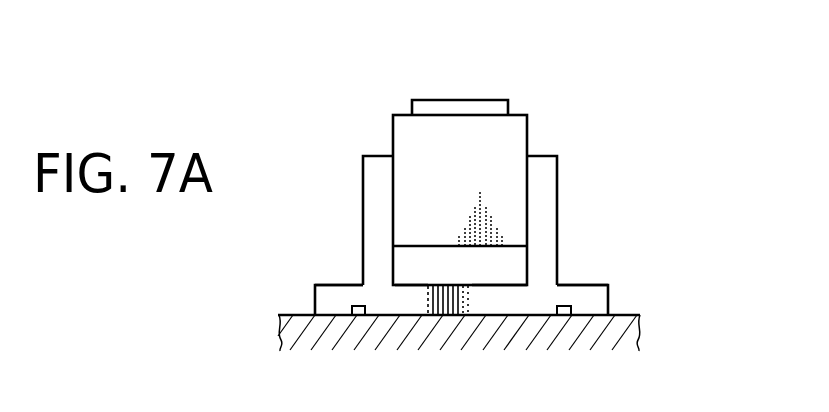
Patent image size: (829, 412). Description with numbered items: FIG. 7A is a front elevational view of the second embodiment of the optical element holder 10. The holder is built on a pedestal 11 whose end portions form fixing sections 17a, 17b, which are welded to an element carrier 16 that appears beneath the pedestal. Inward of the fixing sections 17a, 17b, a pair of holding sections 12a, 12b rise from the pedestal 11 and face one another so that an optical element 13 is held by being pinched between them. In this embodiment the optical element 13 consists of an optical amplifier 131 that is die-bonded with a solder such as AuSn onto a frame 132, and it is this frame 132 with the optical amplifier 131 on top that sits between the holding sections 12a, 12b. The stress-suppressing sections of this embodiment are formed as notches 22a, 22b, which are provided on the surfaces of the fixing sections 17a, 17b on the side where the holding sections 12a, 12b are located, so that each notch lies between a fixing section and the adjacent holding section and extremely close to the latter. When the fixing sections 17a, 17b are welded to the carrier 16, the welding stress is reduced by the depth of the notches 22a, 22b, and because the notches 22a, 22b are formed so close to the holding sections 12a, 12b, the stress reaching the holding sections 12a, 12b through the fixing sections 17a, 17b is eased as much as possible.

The light emitting device 10 is at (630, 189).
The pedestal 11 is at (506, 317).
The holding section 12a is at (371, 155).
The holding section 12b is at (549, 155).
The optical element 13 is at (453, 143).
The optical amplifier 131 is at (467, 78).
The frame 132 is at (403, 133).
The carrier 16 is at (626, 315).
The fixing section 17a is at (338, 284).
The fixing section 17b is at (581, 284).
The notch 22a is at (360, 316).
The notch 22b is at (566, 316).